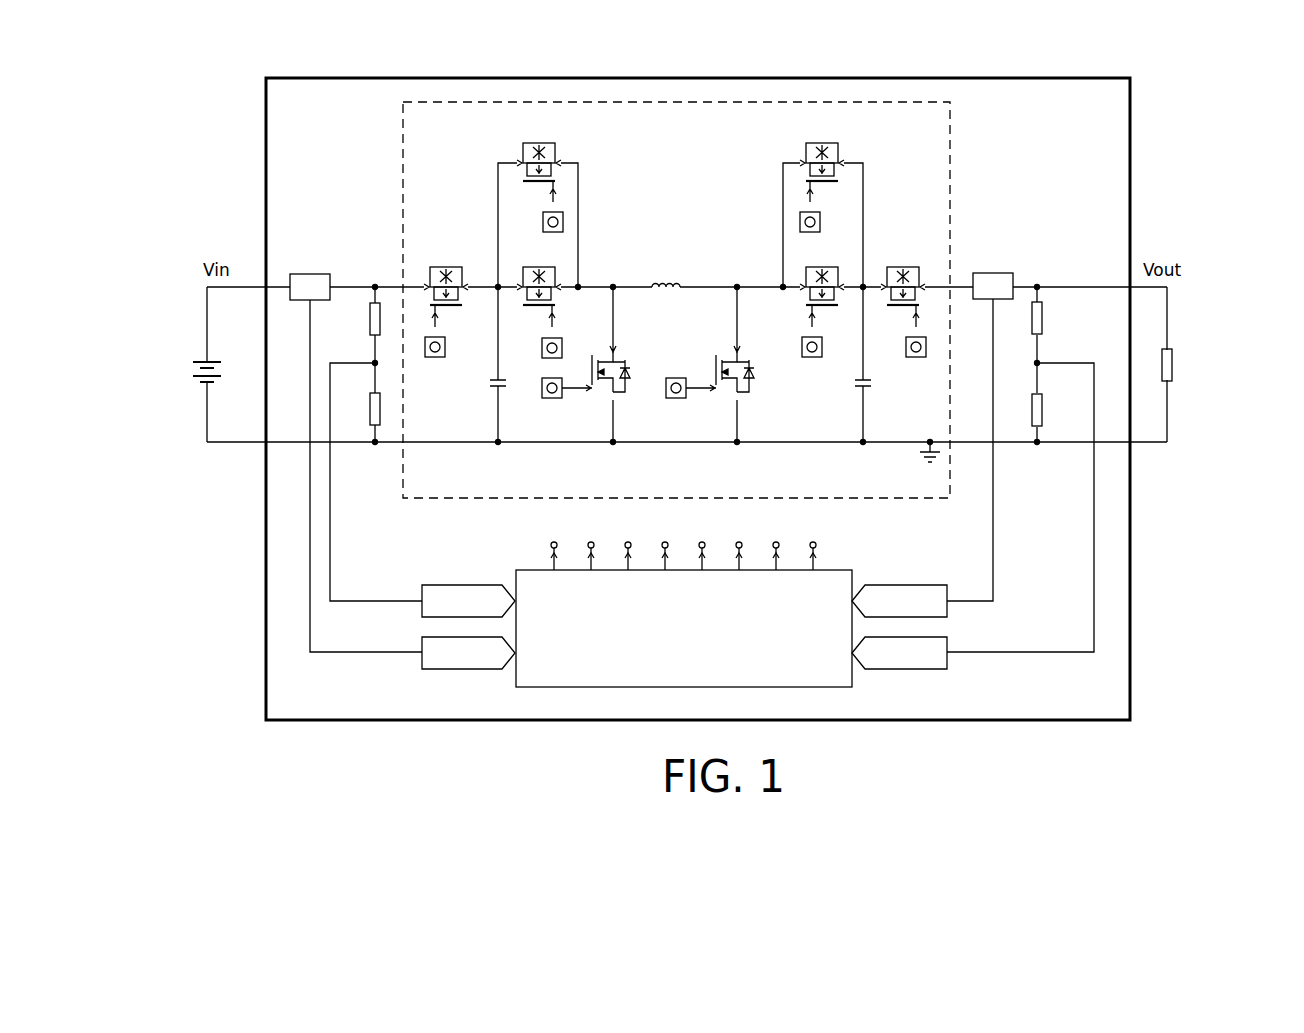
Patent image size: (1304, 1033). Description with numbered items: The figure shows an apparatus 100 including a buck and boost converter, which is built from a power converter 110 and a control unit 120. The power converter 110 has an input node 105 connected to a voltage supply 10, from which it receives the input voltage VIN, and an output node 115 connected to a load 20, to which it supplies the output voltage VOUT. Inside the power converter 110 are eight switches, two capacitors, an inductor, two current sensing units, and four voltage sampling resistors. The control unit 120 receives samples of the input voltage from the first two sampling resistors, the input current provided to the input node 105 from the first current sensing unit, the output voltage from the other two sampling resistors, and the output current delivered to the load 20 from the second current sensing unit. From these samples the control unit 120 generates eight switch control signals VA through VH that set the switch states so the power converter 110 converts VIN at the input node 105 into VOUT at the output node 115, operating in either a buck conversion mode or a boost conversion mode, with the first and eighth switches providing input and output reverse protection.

The apparatus 100 is at (1203, 106).
The input node 105 is at (349, 434).
The power converter 110 is at (445, 136).
The output node 115 is at (1023, 452).
The control unit 120 is at (558, 606).
The voltage supply 10 is at (201, 364).
The load 20 is at (1214, 364).